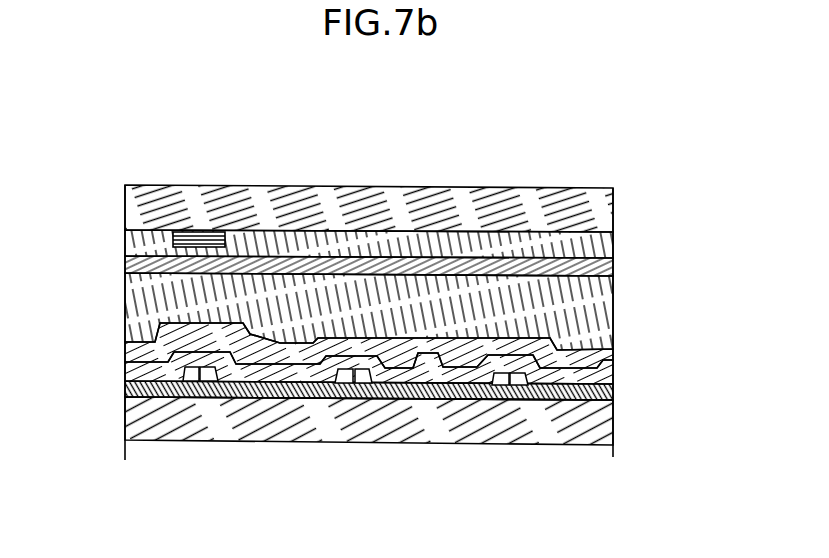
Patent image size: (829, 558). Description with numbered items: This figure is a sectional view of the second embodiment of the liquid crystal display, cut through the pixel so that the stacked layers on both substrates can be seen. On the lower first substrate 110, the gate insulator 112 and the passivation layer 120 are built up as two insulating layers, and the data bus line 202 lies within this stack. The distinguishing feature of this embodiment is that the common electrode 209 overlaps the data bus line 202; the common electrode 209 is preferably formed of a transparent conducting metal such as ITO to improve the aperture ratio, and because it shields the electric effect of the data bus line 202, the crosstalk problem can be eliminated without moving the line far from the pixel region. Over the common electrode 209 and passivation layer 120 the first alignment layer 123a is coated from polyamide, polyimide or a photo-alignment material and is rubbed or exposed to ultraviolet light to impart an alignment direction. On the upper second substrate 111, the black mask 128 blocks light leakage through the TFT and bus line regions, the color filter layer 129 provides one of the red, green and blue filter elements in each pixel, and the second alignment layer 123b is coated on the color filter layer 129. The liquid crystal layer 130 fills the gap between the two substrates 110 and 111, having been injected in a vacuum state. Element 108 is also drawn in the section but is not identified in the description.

The data line 108 is at (353, 384).
The first substrate 110 is at (527, 444).
The second substrate 111 is at (552, 188).
The gate insulator 112 is at (612, 400).
The passivation layer 120 is at (612, 383).
The first alignment layer 123a is at (610, 357).
The second alignment layer 123b is at (610, 277).
The black mask 128 is at (196, 233).
The color filter layer 129 is at (607, 245).
The liquid crystal layer 130 is at (140, 292).
The data bus line 202 is at (190, 397).
The common electrode 209 is at (258, 398).